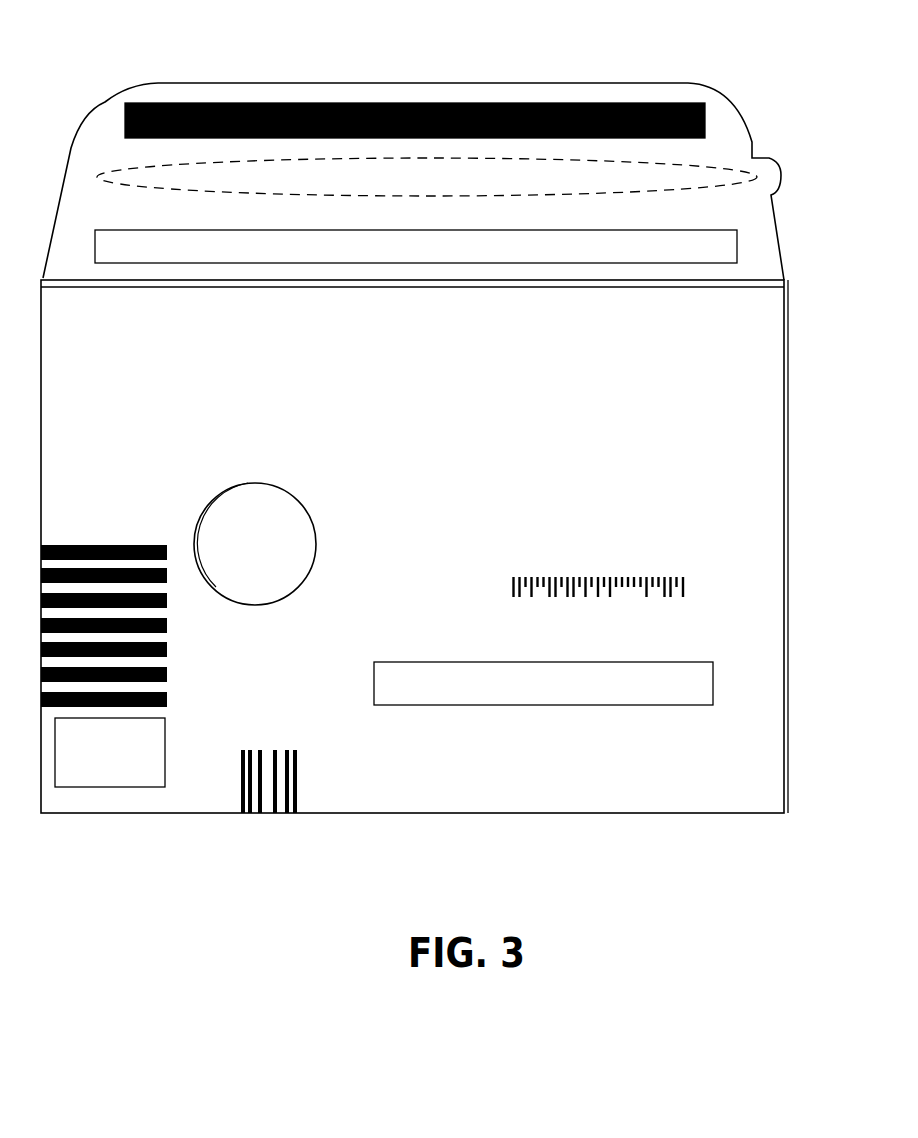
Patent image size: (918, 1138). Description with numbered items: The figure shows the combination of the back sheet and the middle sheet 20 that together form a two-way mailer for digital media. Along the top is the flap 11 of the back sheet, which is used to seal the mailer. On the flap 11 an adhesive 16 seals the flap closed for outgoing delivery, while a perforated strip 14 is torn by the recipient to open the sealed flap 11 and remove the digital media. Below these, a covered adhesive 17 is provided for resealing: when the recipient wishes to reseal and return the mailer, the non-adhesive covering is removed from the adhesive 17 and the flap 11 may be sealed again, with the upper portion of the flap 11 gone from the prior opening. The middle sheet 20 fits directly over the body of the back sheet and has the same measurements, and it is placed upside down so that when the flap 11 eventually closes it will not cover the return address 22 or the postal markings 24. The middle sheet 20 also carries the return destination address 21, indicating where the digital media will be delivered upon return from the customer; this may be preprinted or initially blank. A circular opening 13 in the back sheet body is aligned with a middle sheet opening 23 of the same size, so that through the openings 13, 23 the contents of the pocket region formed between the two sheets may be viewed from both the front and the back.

The flap 11 is at (414, 444).
The perforated strip 14 is at (705, 175).
The adhesive 16 is at (320, 117).
The covered adhesive 17 is at (165, 240).
The circular opening 13 is at (213, 525).
The middle sheet opening 23 is at (208, 505).
The middle sheet 20 is at (430, 787).
The return destination address 21 is at (692, 510).
The return address 22 is at (585, 732).
The postal markings 24 is at (123, 788).